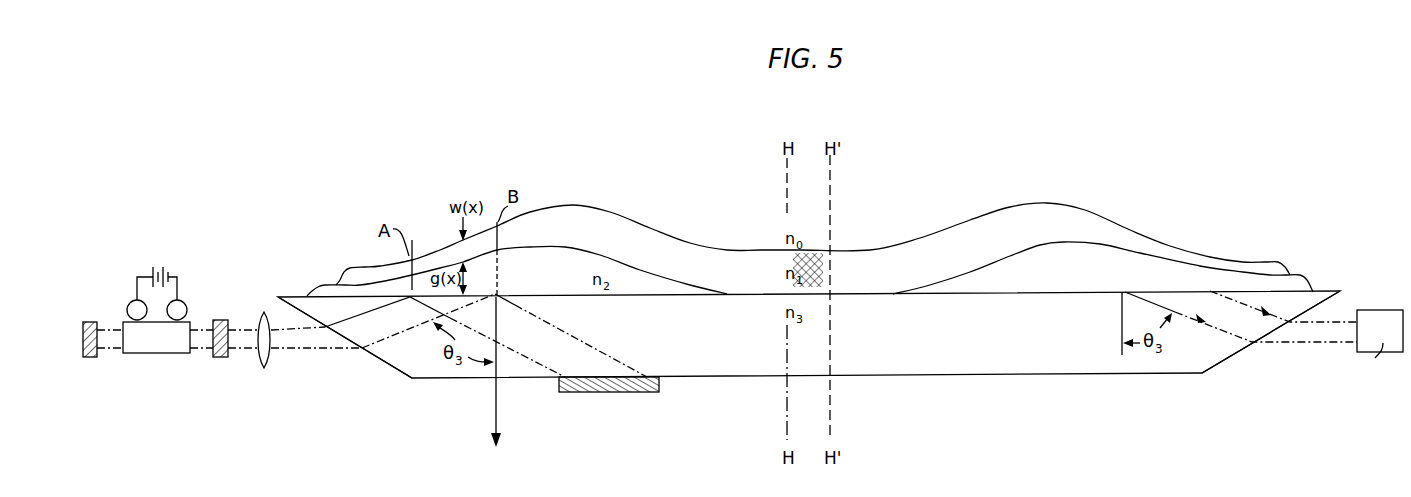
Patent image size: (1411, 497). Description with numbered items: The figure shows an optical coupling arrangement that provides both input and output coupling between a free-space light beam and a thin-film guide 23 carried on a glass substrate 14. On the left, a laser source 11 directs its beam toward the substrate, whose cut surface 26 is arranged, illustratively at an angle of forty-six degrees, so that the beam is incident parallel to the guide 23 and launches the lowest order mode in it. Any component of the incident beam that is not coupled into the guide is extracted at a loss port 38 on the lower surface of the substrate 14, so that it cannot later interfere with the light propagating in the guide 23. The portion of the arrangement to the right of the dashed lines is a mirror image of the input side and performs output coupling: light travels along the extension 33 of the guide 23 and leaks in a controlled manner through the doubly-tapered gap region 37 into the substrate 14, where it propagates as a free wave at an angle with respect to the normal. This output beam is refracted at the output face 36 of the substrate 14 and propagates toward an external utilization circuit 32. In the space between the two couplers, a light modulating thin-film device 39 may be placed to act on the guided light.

The laser 11 is at (170, 379).
The substrate 14 is at (885, 363).
The guide 23 is at (562, 207).
The surface 26 is at (385, 364).
The external utilization circuit 32 is at (1377, 310).
The extension of guide 33 is at (935, 257).
The output face of substrate 36 is at (1222, 363).
The doubly-tapered gap region 37 is at (1133, 272).
The loss port 38 is at (600, 392).
The light modulating thin-film device 39 is at (816, 262).